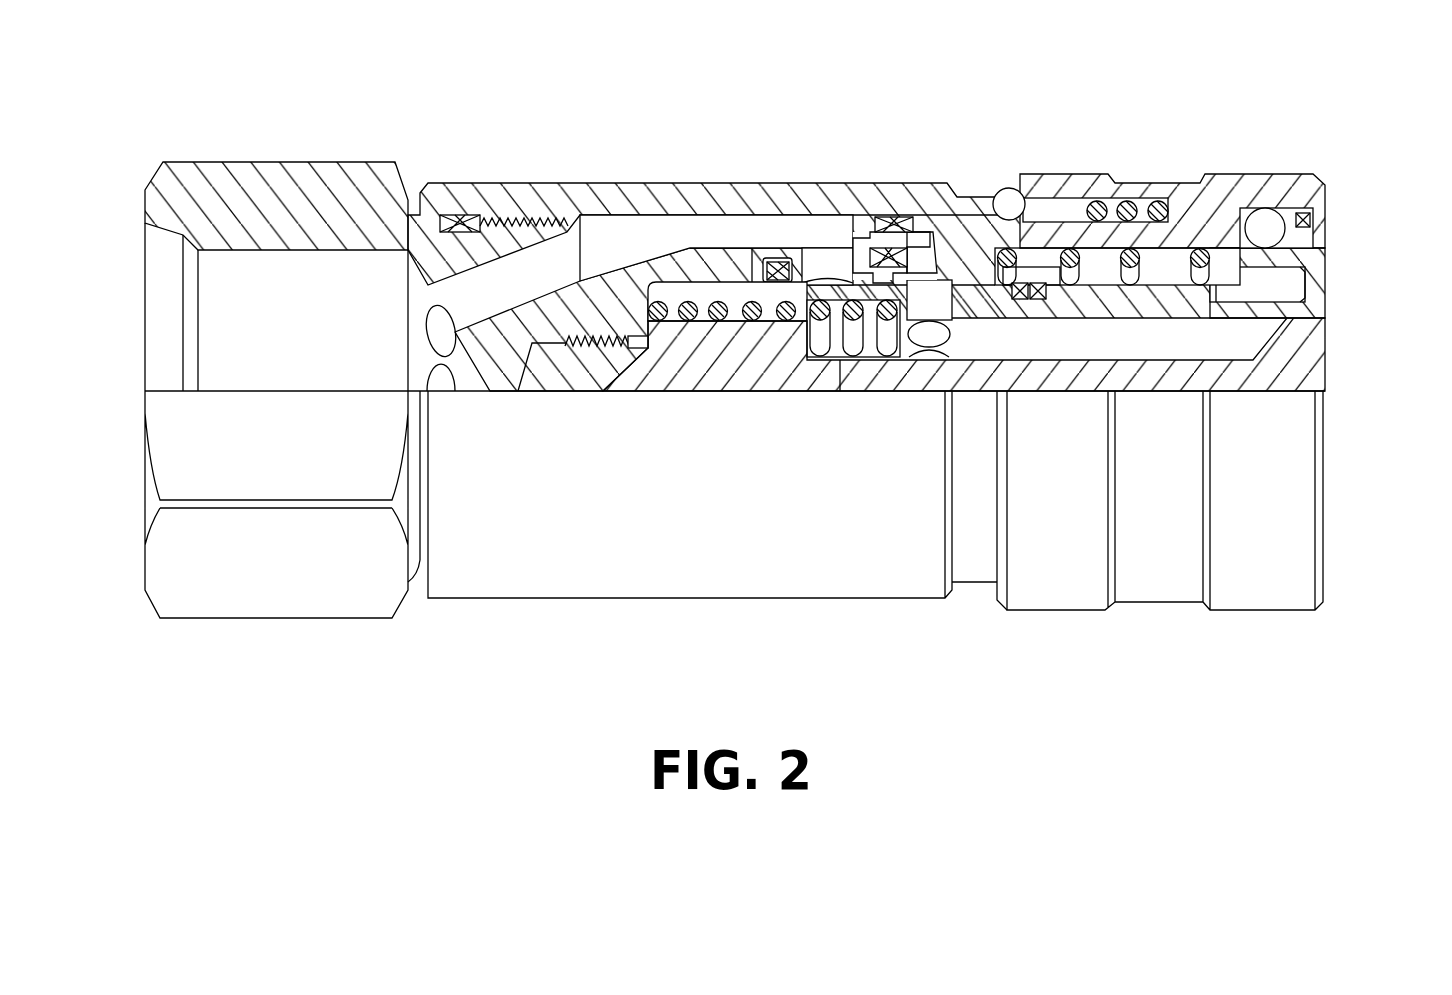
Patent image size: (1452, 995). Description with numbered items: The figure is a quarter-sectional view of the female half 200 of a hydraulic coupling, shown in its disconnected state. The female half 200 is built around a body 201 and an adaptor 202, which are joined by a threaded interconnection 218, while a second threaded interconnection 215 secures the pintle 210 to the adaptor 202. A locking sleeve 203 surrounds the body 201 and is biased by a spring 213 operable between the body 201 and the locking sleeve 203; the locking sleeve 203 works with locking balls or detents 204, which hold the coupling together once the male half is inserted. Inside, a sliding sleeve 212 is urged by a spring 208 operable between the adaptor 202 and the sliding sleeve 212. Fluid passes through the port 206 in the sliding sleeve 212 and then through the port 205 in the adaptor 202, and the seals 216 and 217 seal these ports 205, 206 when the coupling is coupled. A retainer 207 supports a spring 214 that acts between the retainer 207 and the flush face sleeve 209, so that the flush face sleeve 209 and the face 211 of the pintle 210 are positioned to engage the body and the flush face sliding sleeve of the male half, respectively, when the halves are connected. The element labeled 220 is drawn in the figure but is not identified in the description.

The female half 200 is at (738, 165).
The body 201 is at (445, 192).
The adaptor 202 is at (258, 190).
The locking sleeve 203 is at (1213, 197).
The locking balls or detents 204 is at (1323, 185).
The port 205 is at (828, 258).
The port 206 is at (923, 307).
The retainer 207 is at (920, 247).
The spring 208 is at (687, 301).
The flush face sleeve 209 is at (1310, 277).
The pintle 210 is at (1290, 380).
The face of the pintle 211 is at (1318, 348).
The sliding sleeve 212 is at (1092, 307).
The spring 213 is at (1126, 200).
The spring 214 is at (997, 290).
The threaded interconnection 215 is at (597, 343).
The seal 216 is at (883, 255).
The seal 217 is at (772, 262).
The threaded interconnection 218 is at (525, 222).
The detent 220 is at (1010, 222).